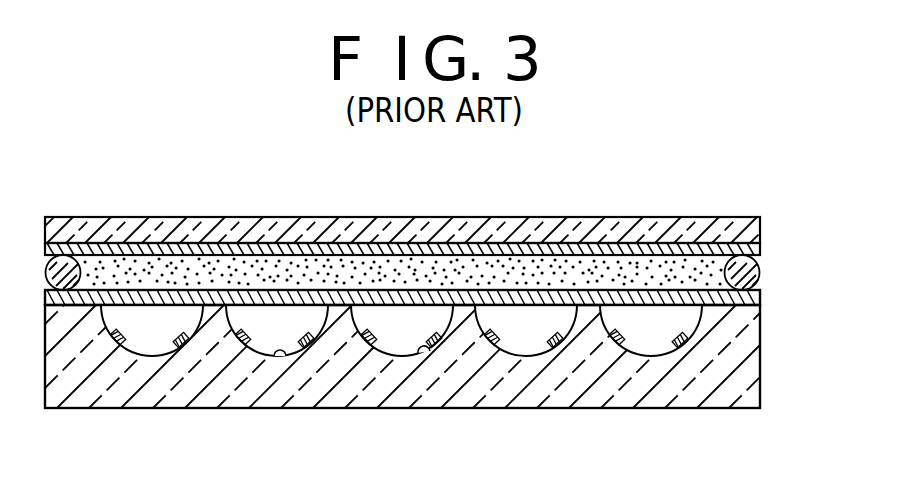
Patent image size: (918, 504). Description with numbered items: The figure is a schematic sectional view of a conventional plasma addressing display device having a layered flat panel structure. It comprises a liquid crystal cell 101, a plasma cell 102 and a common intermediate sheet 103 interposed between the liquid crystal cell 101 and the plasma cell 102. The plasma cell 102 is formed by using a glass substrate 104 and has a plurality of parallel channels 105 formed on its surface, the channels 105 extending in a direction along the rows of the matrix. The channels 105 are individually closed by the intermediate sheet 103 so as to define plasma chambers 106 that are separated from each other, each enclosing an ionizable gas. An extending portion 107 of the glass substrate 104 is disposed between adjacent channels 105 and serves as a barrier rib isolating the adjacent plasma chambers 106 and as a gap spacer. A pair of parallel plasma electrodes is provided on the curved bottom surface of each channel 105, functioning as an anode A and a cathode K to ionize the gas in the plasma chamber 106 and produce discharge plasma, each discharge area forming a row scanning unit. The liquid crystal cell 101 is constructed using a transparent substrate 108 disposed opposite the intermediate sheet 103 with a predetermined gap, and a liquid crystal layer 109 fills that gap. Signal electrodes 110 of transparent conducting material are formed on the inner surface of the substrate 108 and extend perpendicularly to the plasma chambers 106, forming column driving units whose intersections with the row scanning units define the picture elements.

The liquid crystal cell 101 is at (772, 217).
The plasma cell 102 is at (772, 308).
The common intermediate sheet 103 is at (657, 311).
The glass substrate 104 is at (241, 388).
The channels 105 is at (283, 356).
The plasma chambers 106 is at (150, 334).
The extending portion 107 is at (585, 331).
The transparent substrate 108 is at (535, 231).
The liquid crystal layer 109 is at (253, 268).
The signal electrodes 110 is at (393, 243).
The anode A is at (391, 357).
The cathode K is at (421, 354).